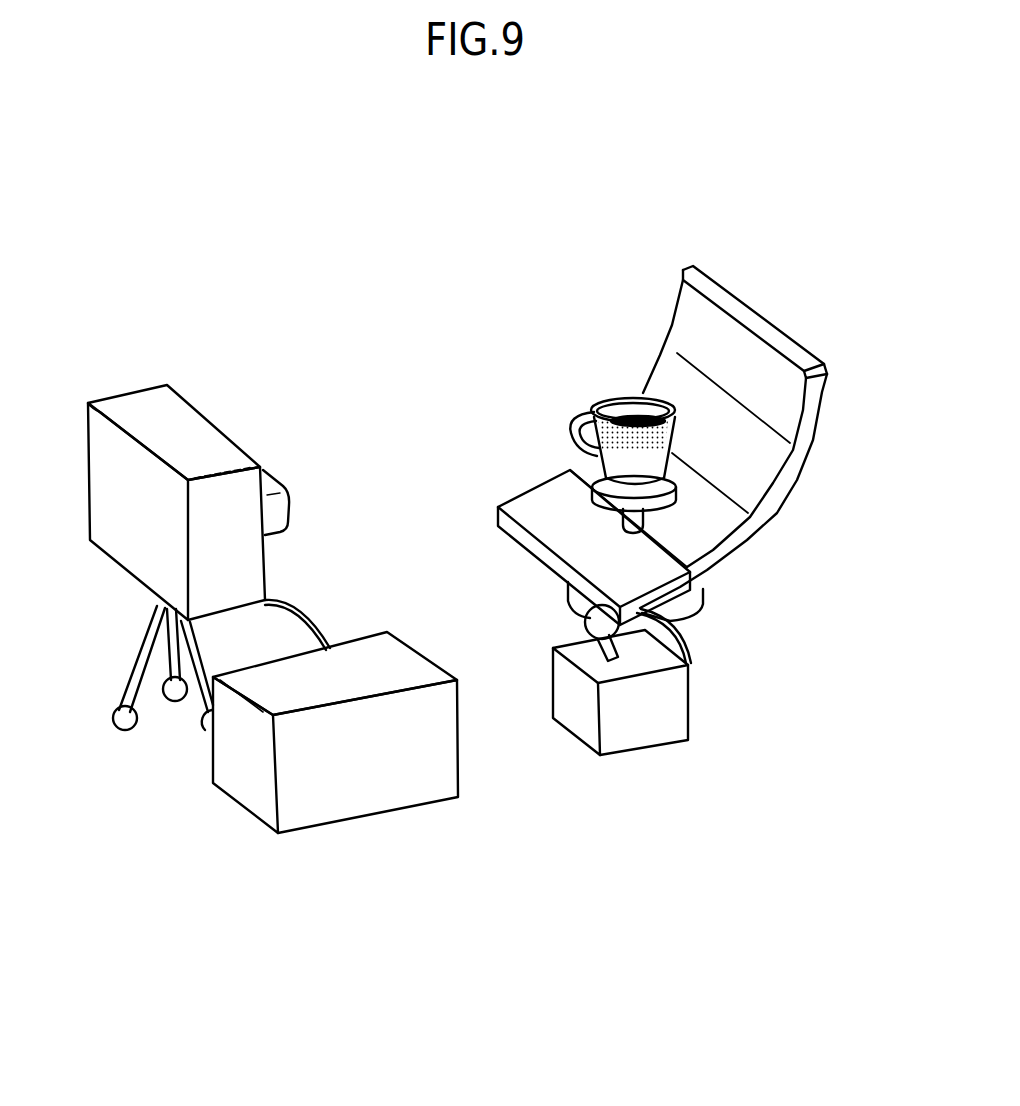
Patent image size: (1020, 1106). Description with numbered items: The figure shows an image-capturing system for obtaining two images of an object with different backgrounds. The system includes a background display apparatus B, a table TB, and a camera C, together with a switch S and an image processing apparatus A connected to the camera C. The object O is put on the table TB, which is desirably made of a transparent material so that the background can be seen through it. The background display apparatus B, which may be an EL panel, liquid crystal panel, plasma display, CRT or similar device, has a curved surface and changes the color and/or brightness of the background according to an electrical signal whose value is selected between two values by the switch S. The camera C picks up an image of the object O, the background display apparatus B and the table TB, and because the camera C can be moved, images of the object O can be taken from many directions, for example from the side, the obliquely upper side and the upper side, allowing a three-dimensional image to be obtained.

The camera C is at (148, 385).
The image processing apparatus A is at (322, 830).
The background display apparatus B is at (692, 266).
The table TB is at (573, 470).
The object O is at (610, 398).
The switch S is at (648, 743).